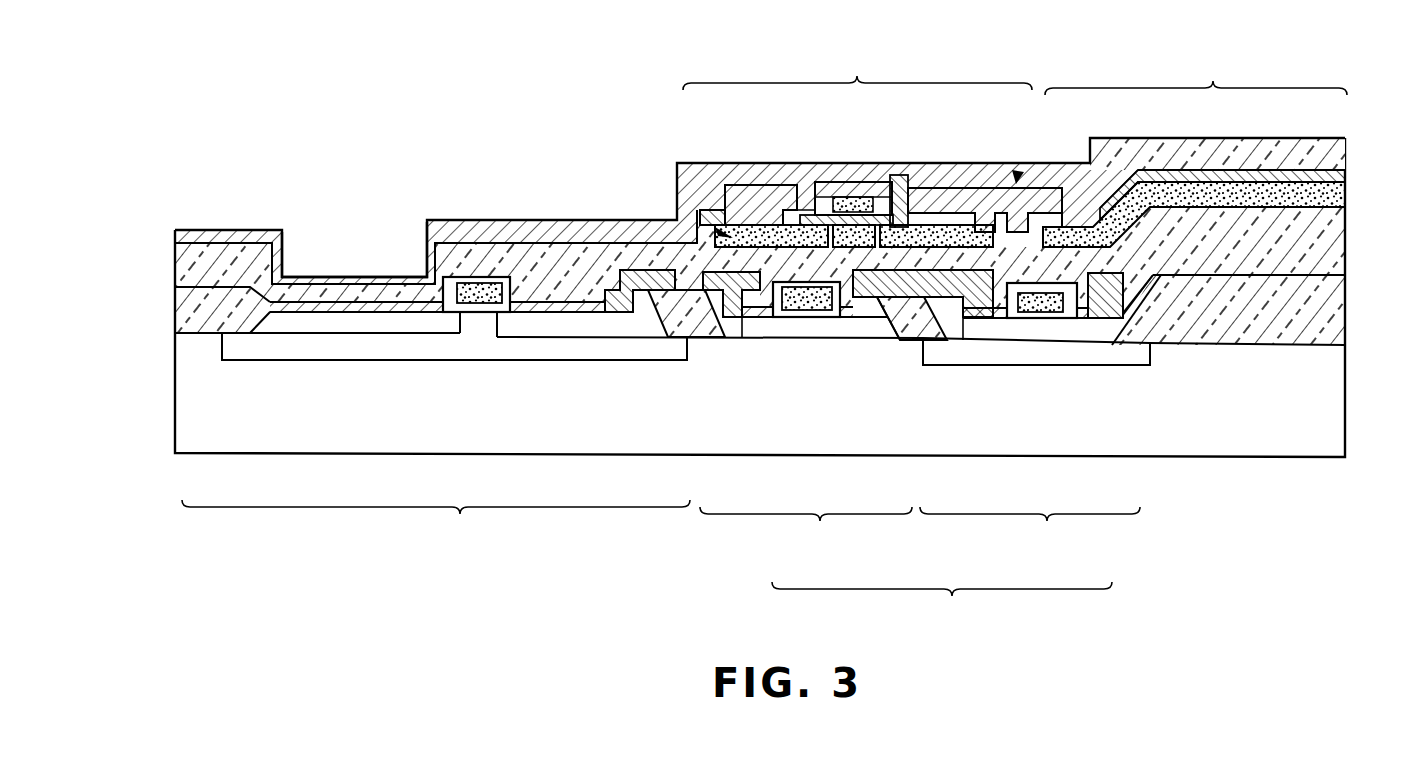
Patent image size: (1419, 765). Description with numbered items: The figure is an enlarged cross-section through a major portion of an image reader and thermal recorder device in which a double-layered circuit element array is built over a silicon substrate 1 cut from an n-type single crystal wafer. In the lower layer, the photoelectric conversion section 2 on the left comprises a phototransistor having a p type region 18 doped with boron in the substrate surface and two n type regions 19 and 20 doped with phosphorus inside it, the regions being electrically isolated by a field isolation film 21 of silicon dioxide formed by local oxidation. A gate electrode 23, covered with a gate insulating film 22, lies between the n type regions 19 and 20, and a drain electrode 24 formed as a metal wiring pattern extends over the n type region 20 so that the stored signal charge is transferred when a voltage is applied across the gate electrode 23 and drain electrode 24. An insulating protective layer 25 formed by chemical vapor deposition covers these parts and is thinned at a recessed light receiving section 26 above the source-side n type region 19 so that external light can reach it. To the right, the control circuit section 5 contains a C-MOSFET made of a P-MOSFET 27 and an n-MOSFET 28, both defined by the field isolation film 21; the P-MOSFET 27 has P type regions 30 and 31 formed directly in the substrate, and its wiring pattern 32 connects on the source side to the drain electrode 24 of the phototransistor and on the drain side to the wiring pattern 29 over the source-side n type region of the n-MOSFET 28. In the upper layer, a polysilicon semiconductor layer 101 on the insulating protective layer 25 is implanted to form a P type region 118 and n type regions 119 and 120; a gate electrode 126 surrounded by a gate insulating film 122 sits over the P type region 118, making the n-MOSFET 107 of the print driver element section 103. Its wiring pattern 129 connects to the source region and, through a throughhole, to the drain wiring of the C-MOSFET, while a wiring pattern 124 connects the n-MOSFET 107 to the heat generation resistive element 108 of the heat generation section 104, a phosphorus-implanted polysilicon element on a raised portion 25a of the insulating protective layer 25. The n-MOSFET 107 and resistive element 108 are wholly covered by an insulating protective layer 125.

The silicon substrate 1 is at (178, 407).
The photoelectric conversion section 2 is at (436, 524).
The control circuit section 5 is at (942, 607).
The p type region 18 is at (280, 349).
The n type region 19 is at (413, 329).
The n type region 20 is at (578, 329).
The field isolation film 21 is at (1330, 330).
The gate insulating film 22 is at (480, 319).
The gate electrode 23 is at (486, 281).
The drain electrode 24 is at (633, 271).
The insulating protective layer 25 is at (1330, 272).
The raised portion 25a is at (1252, 207).
The recessed light receiving section 26 is at (346, 267).
The P-MOSFET 27 is at (806, 530).
The n-MOSFET 28 is at (1030, 531).
The wiring pattern 29 is at (990, 319).
The P type region 30 is at (778, 316).
The P type region 31 is at (869, 298).
The wiring pattern 32 is at (750, 333).
The semiconductor layer 101 is at (716, 229).
The print driver element section 103 is at (857, 68).
The heat generation section 104 is at (1196, 72).
The n-MOSFET 107 is at (1018, 174).
The heat generation resistive element 108 is at (1334, 214).
The P type region 118 is at (902, 178).
The n type region 119 is at (772, 200).
The n type region 120 is at (930, 235).
The gate insulating film 122 is at (803, 212).
The wiring pattern 124 is at (992, 215).
The insulating protective layer 125 is at (208, 230).
The gate electrode 126 is at (861, 205).
The wiring pattern 129 is at (720, 198).